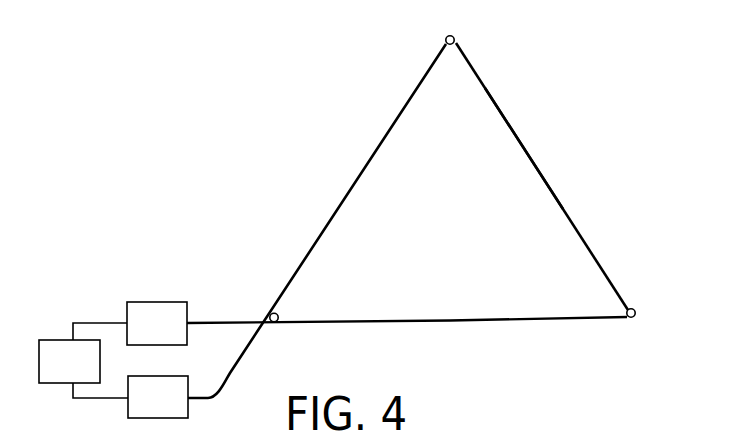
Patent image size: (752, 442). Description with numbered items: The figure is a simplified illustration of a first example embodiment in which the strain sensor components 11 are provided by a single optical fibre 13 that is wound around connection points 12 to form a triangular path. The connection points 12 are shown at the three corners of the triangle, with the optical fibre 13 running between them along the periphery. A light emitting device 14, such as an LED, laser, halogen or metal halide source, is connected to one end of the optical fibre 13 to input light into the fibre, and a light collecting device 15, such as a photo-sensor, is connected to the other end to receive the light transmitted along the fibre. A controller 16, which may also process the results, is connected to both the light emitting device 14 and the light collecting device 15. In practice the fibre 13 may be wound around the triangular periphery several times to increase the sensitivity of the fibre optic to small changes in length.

The strain sensor components 11 is at (588, 195).
The connection points 12 is at (455, 38).
The optical fibre 13 is at (531, 145).
The light emitting device 14 is at (145, 334).
The light collecting device 15 is at (146, 408).
The controller 16 is at (58, 372).